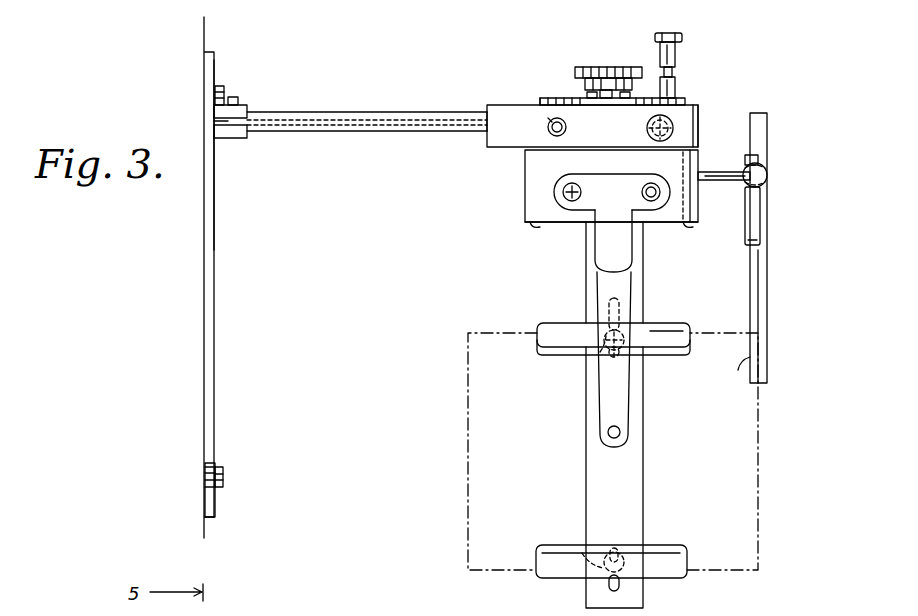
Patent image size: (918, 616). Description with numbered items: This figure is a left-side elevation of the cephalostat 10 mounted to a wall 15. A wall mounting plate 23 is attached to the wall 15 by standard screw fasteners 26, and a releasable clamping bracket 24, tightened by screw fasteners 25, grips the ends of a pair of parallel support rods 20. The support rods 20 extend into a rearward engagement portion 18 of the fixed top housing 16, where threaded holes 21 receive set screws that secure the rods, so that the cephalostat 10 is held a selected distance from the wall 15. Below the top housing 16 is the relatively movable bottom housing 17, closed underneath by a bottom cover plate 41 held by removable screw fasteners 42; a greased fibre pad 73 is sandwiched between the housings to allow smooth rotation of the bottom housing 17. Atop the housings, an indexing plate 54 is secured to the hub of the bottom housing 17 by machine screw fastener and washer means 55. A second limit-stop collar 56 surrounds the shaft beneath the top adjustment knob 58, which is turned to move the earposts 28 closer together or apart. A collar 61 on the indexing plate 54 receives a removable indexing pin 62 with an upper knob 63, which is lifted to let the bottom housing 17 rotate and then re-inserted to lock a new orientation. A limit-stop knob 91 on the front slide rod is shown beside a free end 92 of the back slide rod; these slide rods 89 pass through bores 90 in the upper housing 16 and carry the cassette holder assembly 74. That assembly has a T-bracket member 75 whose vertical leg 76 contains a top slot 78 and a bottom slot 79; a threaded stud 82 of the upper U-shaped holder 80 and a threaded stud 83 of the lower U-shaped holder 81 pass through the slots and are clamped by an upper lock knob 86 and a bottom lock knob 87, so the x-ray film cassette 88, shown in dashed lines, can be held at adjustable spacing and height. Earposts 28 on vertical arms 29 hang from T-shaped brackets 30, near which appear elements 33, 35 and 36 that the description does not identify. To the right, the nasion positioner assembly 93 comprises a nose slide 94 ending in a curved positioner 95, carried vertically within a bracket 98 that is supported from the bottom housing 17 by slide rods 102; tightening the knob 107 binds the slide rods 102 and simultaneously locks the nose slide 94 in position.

The cephalostat 10 is at (797, 63).
The wall 15 is at (222, 352).
The top housing 16 is at (473, 100).
The bottom housing 17 is at (514, 204).
The engagement portion 18 is at (505, 133).
The support rods 20 is at (338, 133).
The threaded holes 21 is at (647, 185).
The wall mounting plate 23 is at (212, 273).
The releasable clamping bracket 24 is at (237, 133).
The screw fasteners 25 is at (236, 100).
The screw fasteners 26 is at (223, 88).
The earposts 28 is at (621, 433).
The vertical arms 29 is at (607, 395).
The T-shaped brackets 30 is at (608, 240).
The screw 33 is at (572, 186).
The aperture 35 is at (649, 201).
The slot 36 is at (662, 195).
The bottom cover plate 41 is at (558, 222).
The screw fasteners 42 is at (532, 226).
The indexing plate 54 is at (550, 99).
The machine screw fastener and washer means 55 is at (602, 101).
The second limit-stop collar 56 is at (600, 86).
The top adjustment knob 58 is at (597, 52).
The collar 61 is at (670, 82).
The indexing pin 62 is at (662, 66).
The knob 63 is at (682, 37).
The greased fibre pad 73 is at (692, 149).
The cassette holder assembly 74 is at (524, 329).
The T-bracket member 75 is at (570, 282).
The vertical leg 76 is at (592, 472).
The top slot 78 is at (623, 300).
The bottom slot 79 is at (608, 580).
The upper U-shaped holder 80 is at (665, 332).
The lower U-shaped holder 81 is at (665, 570).
The threaded stud 82 is at (633, 358).
The threaded stud 83 is at (645, 553).
The upper lock knob 86 is at (588, 352).
The bottom lock knob 87 is at (580, 552).
The x-ray film cassette 88 is at (765, 552).
The slide rods 89 is at (550, 133).
The bores 90 is at (566, 128).
The limit-stop knob 91 is at (670, 127).
The free end 92 is at (549, 119).
The nasion positioner assembly 93 is at (780, 283).
The nose slide 94 is at (762, 295).
The positioner 95 is at (750, 357).
The bracket 98 is at (757, 212).
The slide rods 102 is at (716, 172).
The knob 107 is at (768, 172).